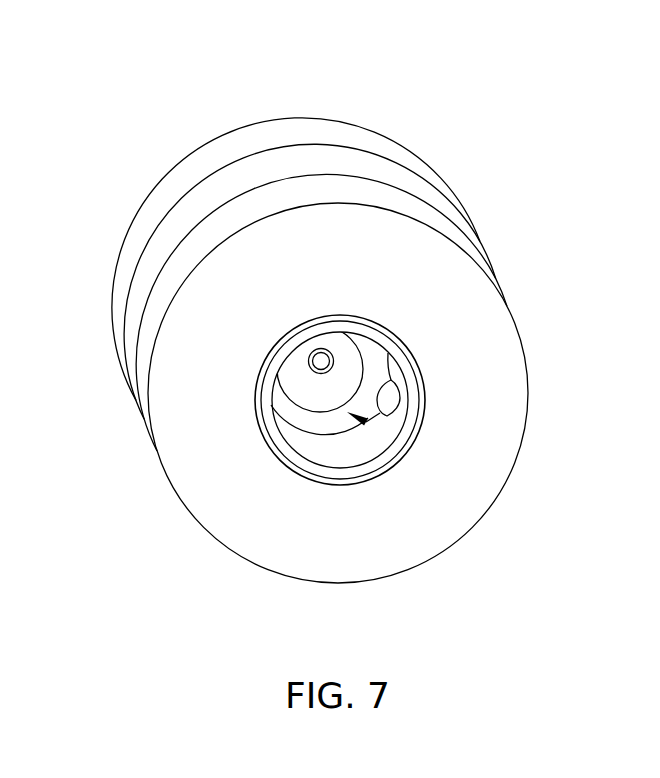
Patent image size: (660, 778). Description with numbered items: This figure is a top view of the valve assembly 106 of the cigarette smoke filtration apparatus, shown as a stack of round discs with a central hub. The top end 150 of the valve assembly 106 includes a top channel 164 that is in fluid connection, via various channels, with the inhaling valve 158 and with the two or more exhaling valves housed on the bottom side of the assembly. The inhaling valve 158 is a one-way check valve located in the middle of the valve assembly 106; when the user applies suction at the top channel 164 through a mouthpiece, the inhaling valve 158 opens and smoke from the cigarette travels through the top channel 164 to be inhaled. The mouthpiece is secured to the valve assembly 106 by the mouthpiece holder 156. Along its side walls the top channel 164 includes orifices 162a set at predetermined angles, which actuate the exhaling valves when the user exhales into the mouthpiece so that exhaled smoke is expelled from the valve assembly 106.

The valve assembly 106 is at (445, 115).
The top end 150 is at (430, 518).
The mouthpiece holder 156 is at (302, 477).
The inhaling valve 158 is at (334, 363).
The orifices 162a is at (401, 403).
The top channel 164 is at (370, 424).